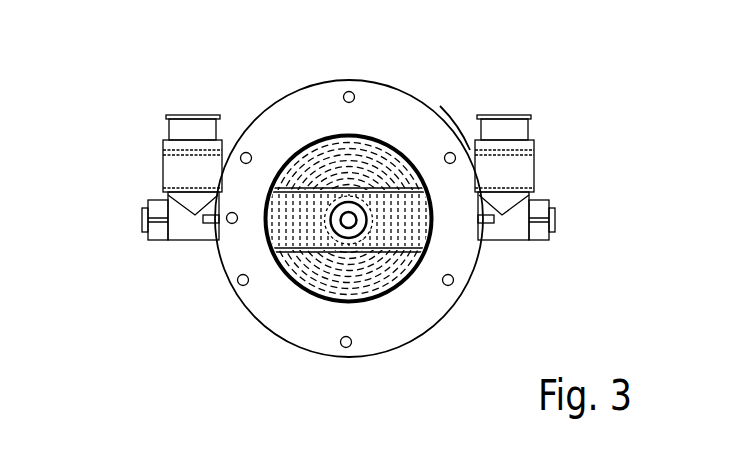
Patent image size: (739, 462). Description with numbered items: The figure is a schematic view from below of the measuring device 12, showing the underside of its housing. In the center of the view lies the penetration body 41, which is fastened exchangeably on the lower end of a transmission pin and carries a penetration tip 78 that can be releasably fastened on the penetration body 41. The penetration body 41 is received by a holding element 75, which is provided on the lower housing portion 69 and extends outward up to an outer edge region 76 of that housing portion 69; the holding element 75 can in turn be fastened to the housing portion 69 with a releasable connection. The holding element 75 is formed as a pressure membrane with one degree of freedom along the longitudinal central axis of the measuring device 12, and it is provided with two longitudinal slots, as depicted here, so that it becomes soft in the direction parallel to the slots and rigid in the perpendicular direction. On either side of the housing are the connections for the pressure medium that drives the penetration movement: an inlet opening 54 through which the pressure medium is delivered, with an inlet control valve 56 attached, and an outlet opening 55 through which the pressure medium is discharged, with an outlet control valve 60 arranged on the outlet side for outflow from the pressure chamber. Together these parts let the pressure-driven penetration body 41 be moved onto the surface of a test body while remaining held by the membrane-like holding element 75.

The lower housing portion 69 is at (411, 80).
The measuring device 12 is at (459, 88).
The outer edge region 76 is at (450, 123).
The outlet control valve 60 is at (552, 165).
The inlet control valve 56 is at (156, 168).
The inlet opening 54 is at (187, 258).
The outlet opening 55 is at (512, 255).
The holding element 75 is at (306, 308).
The penetration tip 78 is at (350, 228).
The penetration body 41 is at (360, 226).